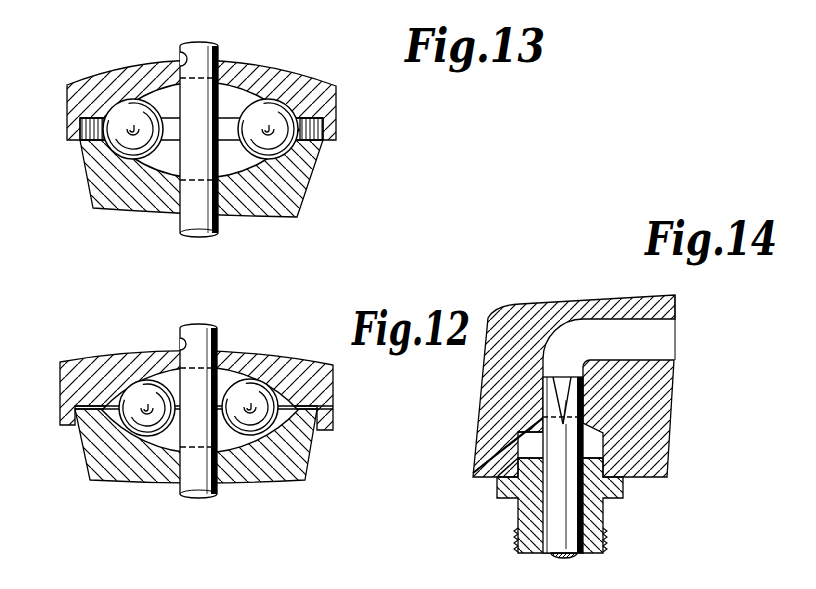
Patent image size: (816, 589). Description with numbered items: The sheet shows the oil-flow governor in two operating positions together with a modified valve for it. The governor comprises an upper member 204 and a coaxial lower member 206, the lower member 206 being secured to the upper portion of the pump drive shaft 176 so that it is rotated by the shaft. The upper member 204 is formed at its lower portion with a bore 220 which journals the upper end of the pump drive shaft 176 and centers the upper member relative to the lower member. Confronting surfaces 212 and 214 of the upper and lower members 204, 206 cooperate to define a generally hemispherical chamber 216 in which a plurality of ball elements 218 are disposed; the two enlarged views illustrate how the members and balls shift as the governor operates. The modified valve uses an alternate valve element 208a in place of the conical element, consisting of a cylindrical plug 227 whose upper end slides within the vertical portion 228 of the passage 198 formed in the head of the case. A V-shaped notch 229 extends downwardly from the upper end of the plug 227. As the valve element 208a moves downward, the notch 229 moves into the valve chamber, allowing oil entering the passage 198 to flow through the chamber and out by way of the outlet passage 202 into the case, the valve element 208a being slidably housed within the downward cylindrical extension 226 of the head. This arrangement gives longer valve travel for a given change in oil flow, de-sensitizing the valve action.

In FIG. 13, the pump drive shaft 176 is at (222, 223).
In FIG. 12, the pump drive shaft 176 is at (219, 488).
In FIG. 14, the passage 198 is at (670, 344).
In FIG. 14, the outlet passage 202 is at (478, 471).
In FIG. 13, the upper member 204 is at (288, 74).
In FIG. 12, the upper member 204 is at (305, 370).
In FIG. 13, the lower member 206 is at (312, 195).
In FIG. 12, the lower member 206 is at (300, 466).
In FIG. 14, the valve element 208a is at (577, 522).
In FIG. 13, the confronting surface 212 is at (138, 88).
In FIG. 12, the confronting surface 212 is at (160, 376).
In FIG. 13, the confronting surface 214 is at (156, 172).
In FIG. 12, the confronting surface 214 is at (163, 445).
In FIG. 12, the hemispherical chamber 216 is at (224, 375).
In FIG. 14, the hemispherical chamber 216 is at (527, 448).
In FIG. 13, the ball elements 218 is at (337, 107).
In FIG. 12, the ball elements 218 is at (284, 407).
In FIG. 13, the bore 220 is at (184, 58).
In FIG. 12, the bore 220 is at (182, 343).
In FIG. 14, the cylindrical extension 226 is at (518, 524).
In FIG. 14, the cylindrical plug 227 is at (588, 543).
In FIG. 14, the vertical portion 228 is at (583, 403).
In FIG. 14, the V-shaped notch 229 is at (566, 409).